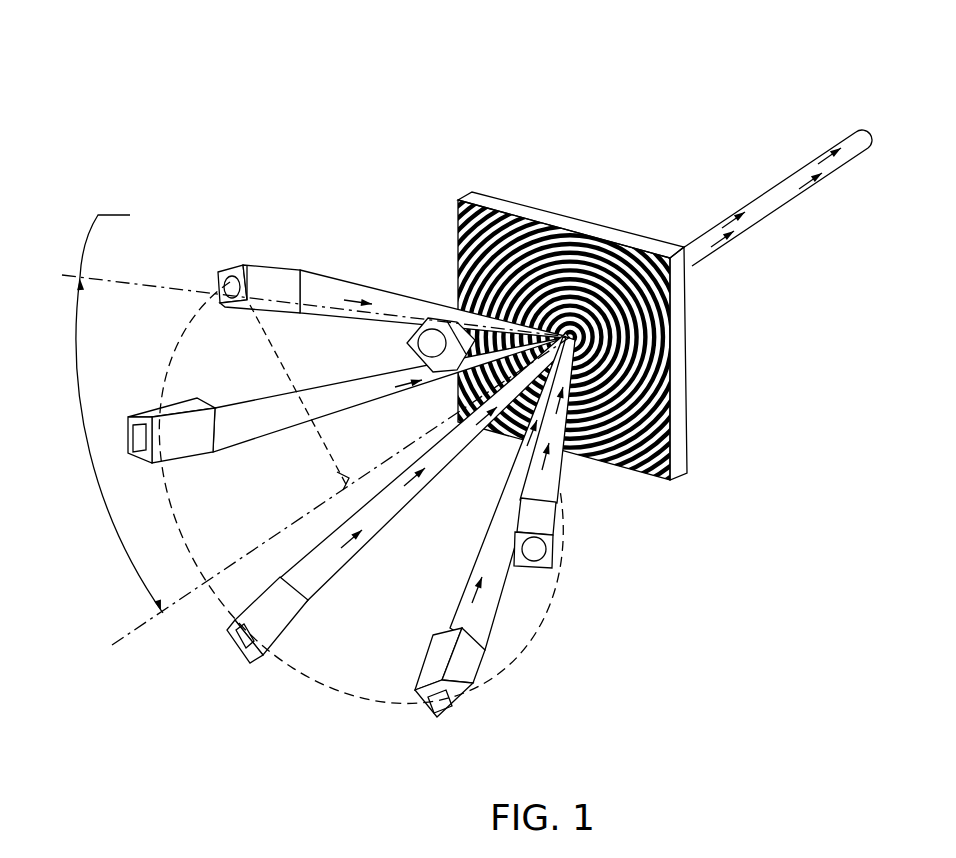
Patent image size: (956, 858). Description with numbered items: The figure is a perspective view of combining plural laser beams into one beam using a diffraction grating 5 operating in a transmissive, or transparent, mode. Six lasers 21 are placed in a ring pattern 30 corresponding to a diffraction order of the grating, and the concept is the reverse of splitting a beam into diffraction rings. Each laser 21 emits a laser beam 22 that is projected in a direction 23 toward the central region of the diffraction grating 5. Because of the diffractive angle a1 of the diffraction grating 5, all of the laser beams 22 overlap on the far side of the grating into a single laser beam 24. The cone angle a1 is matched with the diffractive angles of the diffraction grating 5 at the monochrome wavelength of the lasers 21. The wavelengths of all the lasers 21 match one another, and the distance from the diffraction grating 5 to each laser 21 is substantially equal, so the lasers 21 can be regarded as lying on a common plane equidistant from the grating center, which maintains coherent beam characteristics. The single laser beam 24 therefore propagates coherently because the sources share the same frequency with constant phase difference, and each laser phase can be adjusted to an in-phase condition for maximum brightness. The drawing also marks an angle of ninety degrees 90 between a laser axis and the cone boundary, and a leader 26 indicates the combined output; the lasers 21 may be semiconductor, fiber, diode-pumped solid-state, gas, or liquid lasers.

The diffraction grating 5 is at (572, 225).
The laser 21 is at (278, 270).
The laser beam 22 is at (317, 273).
The direction 23 is at (358, 295).
The single laser beam 24 is at (785, 180).
The light path 26 is at (727, 240).
The ring pattern 30 is at (528, 633).
The diffractive angle a1 is at (316, 422).
The right angle 90 is at (322, 428).